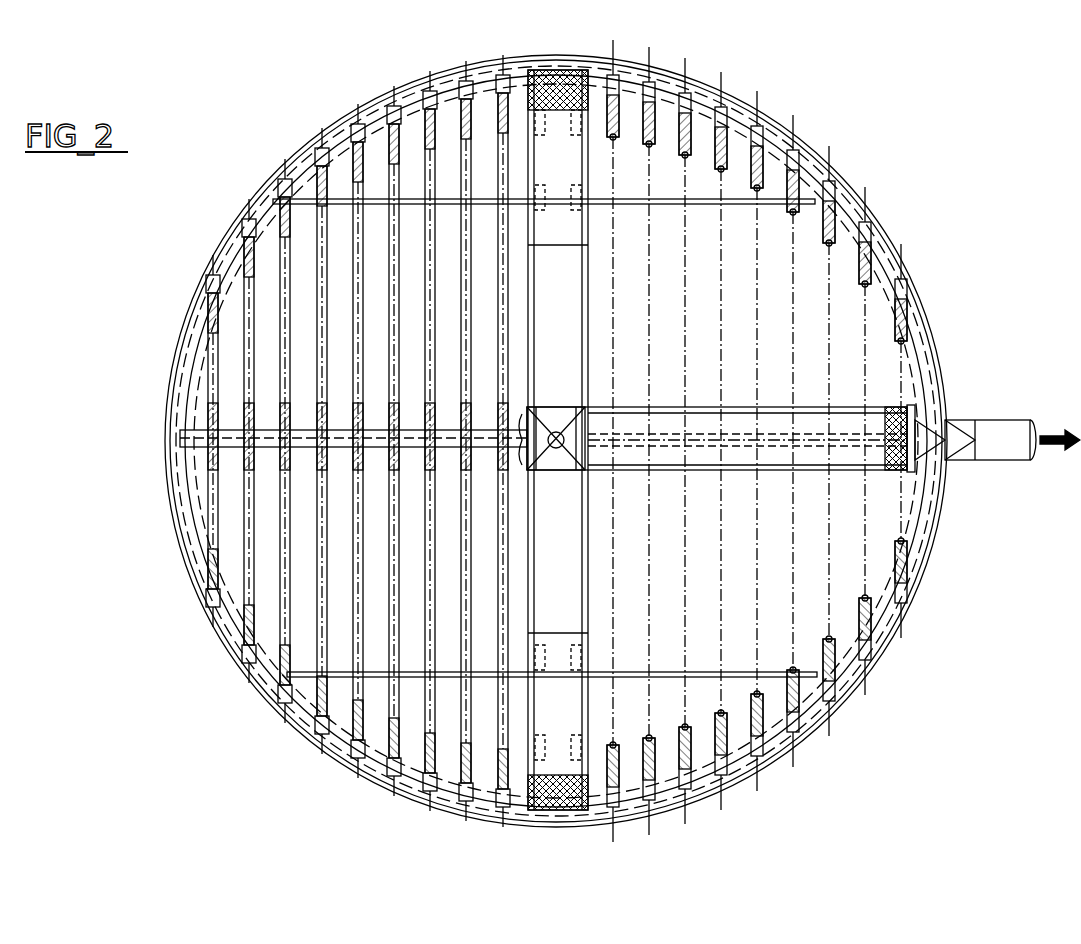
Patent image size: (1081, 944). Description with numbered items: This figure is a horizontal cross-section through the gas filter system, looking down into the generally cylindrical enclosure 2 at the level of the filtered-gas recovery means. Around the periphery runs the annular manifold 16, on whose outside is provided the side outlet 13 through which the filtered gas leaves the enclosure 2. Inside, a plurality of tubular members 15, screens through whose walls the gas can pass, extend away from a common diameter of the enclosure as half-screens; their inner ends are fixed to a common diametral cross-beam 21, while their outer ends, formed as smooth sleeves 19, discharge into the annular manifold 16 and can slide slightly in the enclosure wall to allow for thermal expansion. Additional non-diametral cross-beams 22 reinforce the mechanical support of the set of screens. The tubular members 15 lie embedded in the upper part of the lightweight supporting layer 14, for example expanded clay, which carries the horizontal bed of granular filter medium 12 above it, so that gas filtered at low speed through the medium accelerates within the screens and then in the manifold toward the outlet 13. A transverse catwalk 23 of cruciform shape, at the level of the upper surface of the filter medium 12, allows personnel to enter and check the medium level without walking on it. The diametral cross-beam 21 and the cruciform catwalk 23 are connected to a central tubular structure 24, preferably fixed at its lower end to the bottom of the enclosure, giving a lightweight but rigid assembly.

The enclosure 2 is at (703, 102).
The granular material filter medium 12 is at (840, 600).
The side outlet 13 is at (993, 430).
The supporting layer 14 is at (223, 530).
The tubular members 15 is at (212, 318).
The annular manifold 16 is at (750, 102).
The smooth sleeve 19 is at (862, 235).
The common diametral cross-beam 21 is at (232, 437).
The non-diametral cross-beams 22 is at (340, 200).
The transverse catwalk 23 is at (590, 97).
The central tubular structure 24 is at (545, 478).